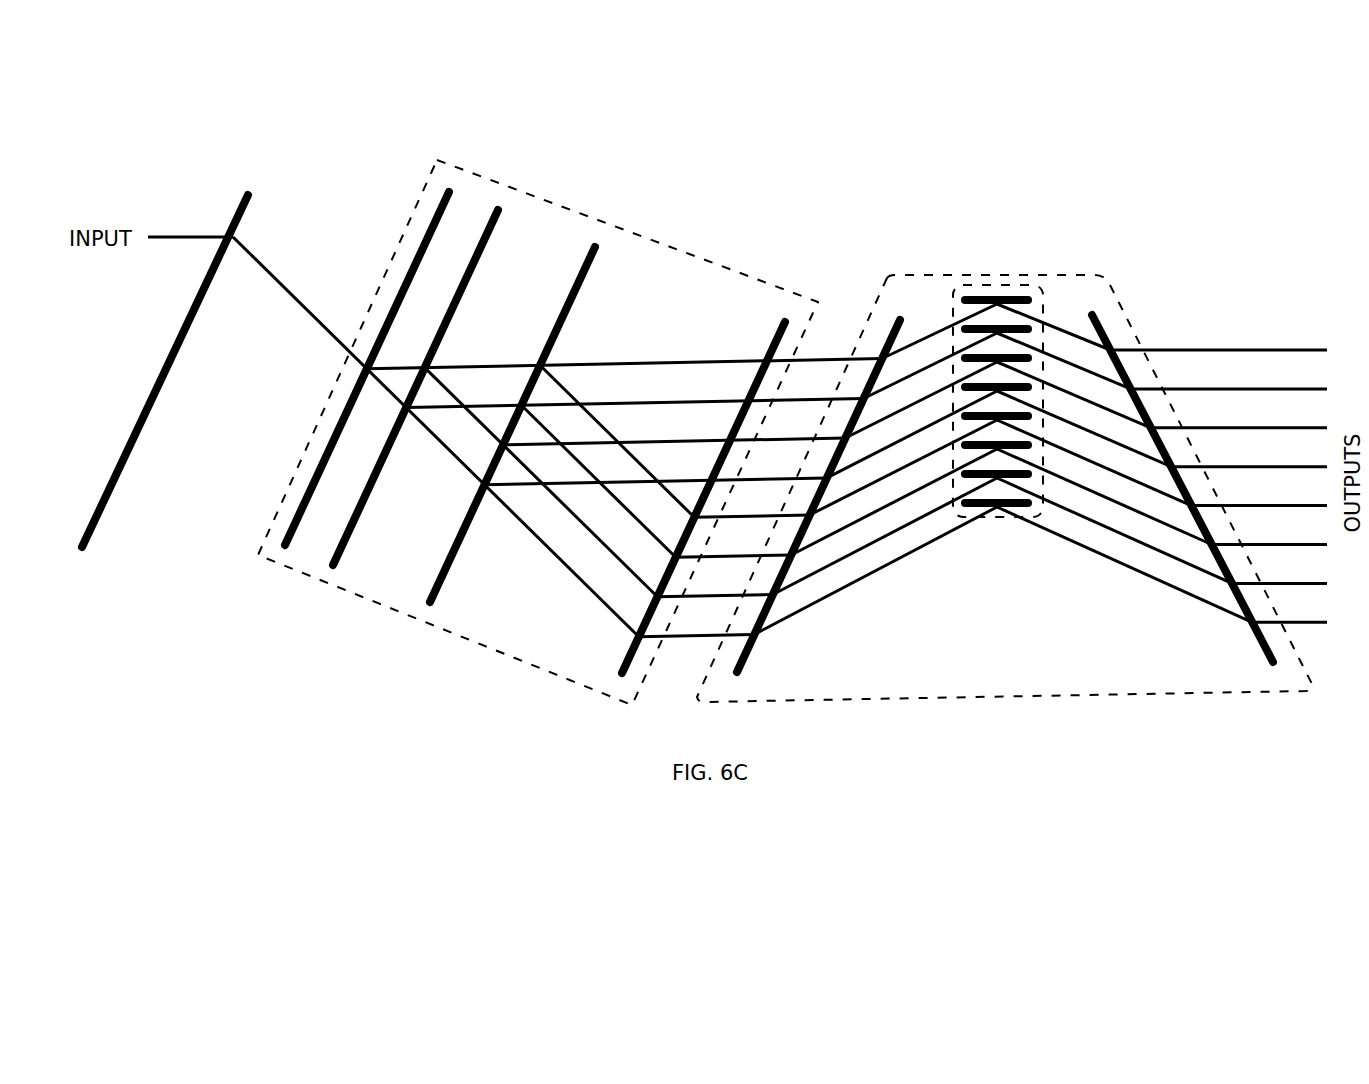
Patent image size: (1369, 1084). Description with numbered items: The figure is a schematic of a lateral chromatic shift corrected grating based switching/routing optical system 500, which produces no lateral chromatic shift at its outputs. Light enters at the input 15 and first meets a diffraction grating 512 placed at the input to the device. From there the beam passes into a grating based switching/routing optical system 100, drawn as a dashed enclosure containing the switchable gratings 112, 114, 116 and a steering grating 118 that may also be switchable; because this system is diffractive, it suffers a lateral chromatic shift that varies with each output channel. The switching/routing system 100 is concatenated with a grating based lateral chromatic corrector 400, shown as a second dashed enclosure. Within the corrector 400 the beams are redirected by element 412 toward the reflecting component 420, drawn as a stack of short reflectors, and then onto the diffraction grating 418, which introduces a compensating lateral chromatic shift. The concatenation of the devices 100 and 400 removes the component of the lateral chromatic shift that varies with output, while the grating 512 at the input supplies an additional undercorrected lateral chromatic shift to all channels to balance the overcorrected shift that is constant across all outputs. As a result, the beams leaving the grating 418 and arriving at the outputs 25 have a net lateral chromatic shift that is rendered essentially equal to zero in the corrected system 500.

The input optical beam 15 is at (186, 237).
The diffraction grating 512 is at (248, 204).
The switchable grating 112 is at (438, 203).
The switchable grating 114 is at (498, 212).
The switchable grating 116 is at (593, 248).
The steering grating 118 is at (783, 323).
The grating based switching/routing system 100 is at (452, 637).
The mirror 412 is at (898, 322).
The reflecting component 420 is at (975, 288).
The diffraction grating 418 is at (1096, 322).
The grating based lateral chromatic corrector 400 is at (972, 702).
The output optical beams 25 is at (1230, 466).
The lateral chromatic shift corrected grating based switching/routing optical system 500 is at (155, 702).